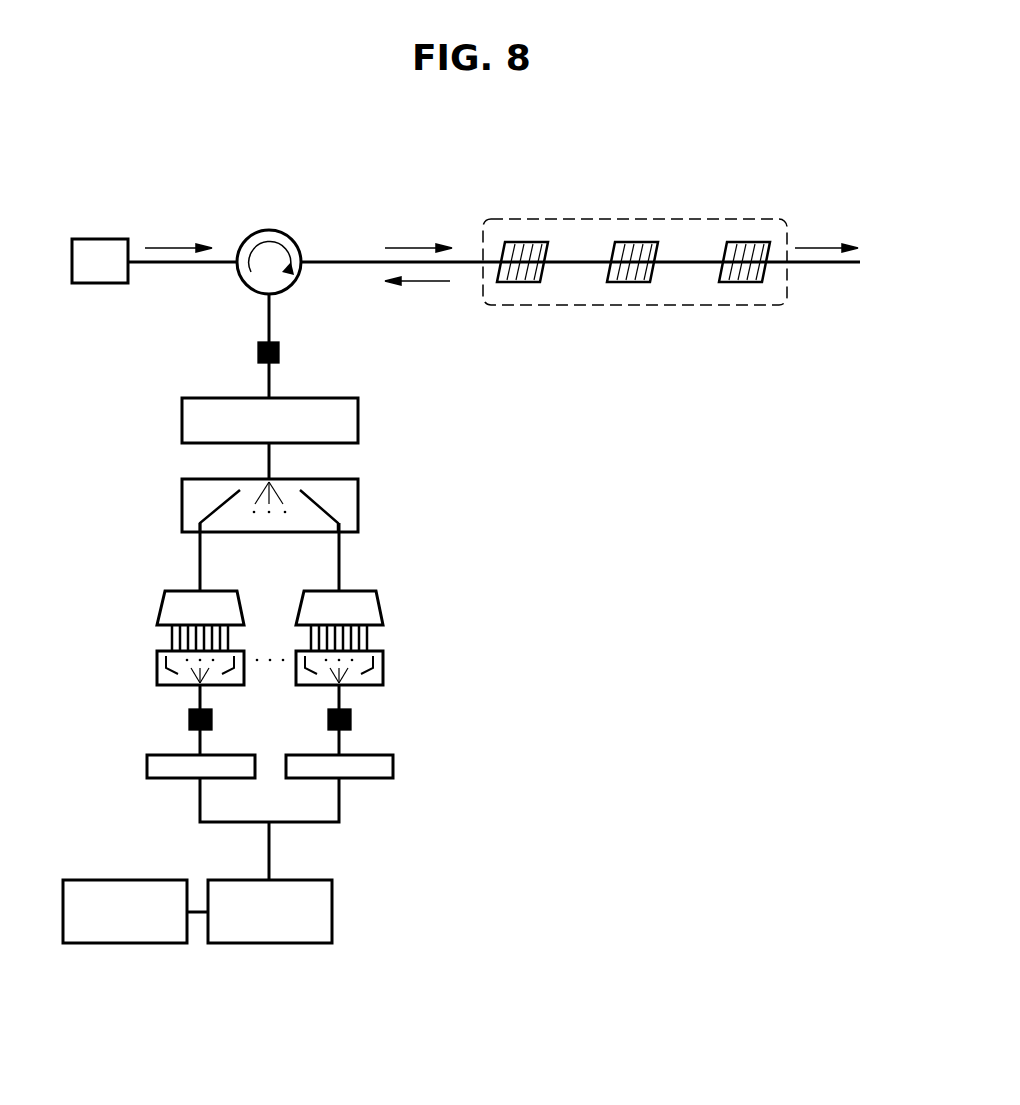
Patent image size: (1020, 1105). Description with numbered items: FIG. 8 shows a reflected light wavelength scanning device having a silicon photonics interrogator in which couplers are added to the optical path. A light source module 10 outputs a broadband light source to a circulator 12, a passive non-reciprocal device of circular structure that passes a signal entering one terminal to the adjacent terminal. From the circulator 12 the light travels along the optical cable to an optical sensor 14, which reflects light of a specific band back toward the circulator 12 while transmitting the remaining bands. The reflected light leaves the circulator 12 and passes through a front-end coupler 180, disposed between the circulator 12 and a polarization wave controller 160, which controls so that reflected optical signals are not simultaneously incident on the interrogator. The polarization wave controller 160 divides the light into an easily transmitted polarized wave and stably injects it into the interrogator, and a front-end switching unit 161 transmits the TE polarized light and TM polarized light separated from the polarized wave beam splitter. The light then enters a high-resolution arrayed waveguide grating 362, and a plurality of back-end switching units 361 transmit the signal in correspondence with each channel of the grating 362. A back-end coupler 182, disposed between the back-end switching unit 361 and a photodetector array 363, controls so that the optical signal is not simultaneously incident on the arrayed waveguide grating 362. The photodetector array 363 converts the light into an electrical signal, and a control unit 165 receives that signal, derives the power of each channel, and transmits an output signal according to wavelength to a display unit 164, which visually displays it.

The light source module 10 is at (97, 238).
The circulator 12 is at (266, 228).
The optical sensor 14 is at (632, 218).
The front-end coupler 180 is at (280, 348).
The polarization wave controller 160 is at (359, 416).
The front-end switching unit 161 is at (359, 500).
The high-resolution arrayed waveguide grating 362 is at (380, 602).
The back-end switching unit 361 is at (384, 662).
The back-end coupler 182 is at (352, 714).
The photodetector array 363 is at (394, 760).
The display unit 164 is at (122, 880).
The control unit 165 is at (333, 906).